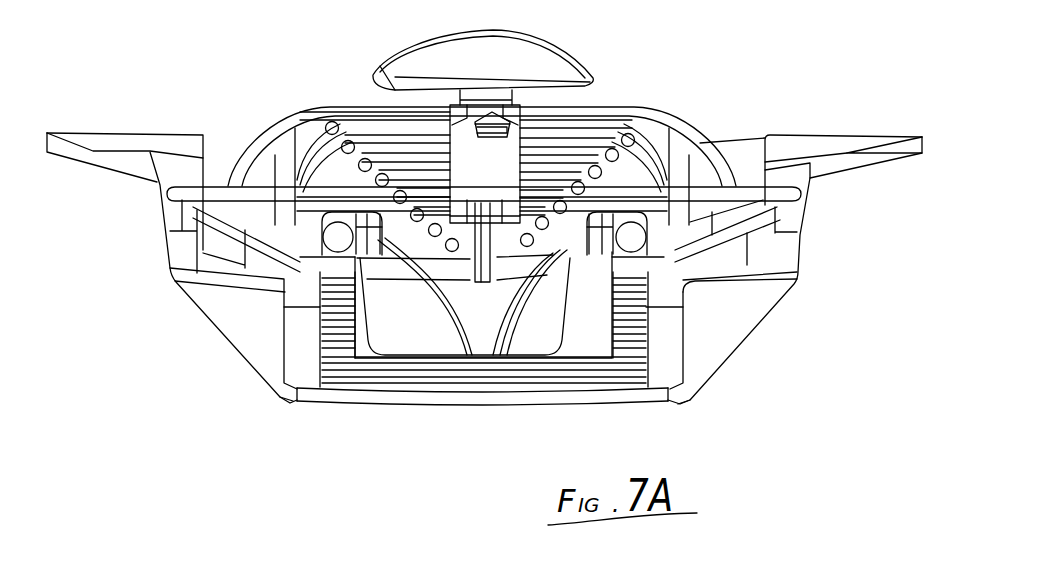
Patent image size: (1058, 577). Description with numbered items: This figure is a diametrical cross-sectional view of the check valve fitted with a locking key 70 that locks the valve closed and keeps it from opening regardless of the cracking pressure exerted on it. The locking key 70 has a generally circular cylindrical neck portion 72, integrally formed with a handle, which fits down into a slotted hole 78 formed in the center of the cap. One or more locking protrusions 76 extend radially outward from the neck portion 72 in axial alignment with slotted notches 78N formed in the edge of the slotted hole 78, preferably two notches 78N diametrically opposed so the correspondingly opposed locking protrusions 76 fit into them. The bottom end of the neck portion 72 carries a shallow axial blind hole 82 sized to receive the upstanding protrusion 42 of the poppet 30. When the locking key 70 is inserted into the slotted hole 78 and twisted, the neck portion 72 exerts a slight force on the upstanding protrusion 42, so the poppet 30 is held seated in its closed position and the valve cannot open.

The poppet 30 is at (557, 272).
The upstanding protrusion 42 is at (470, 278).
The locking key 70 is at (563, 55).
The neck portion 72 is at (485, 164).
The locking protrusion 76 is at (600, 122).
The slotted hole 78 is at (545, 105).
The slotted notch 78N is at (455, 102).
The shallow axial blind hole 82 is at (432, 252).